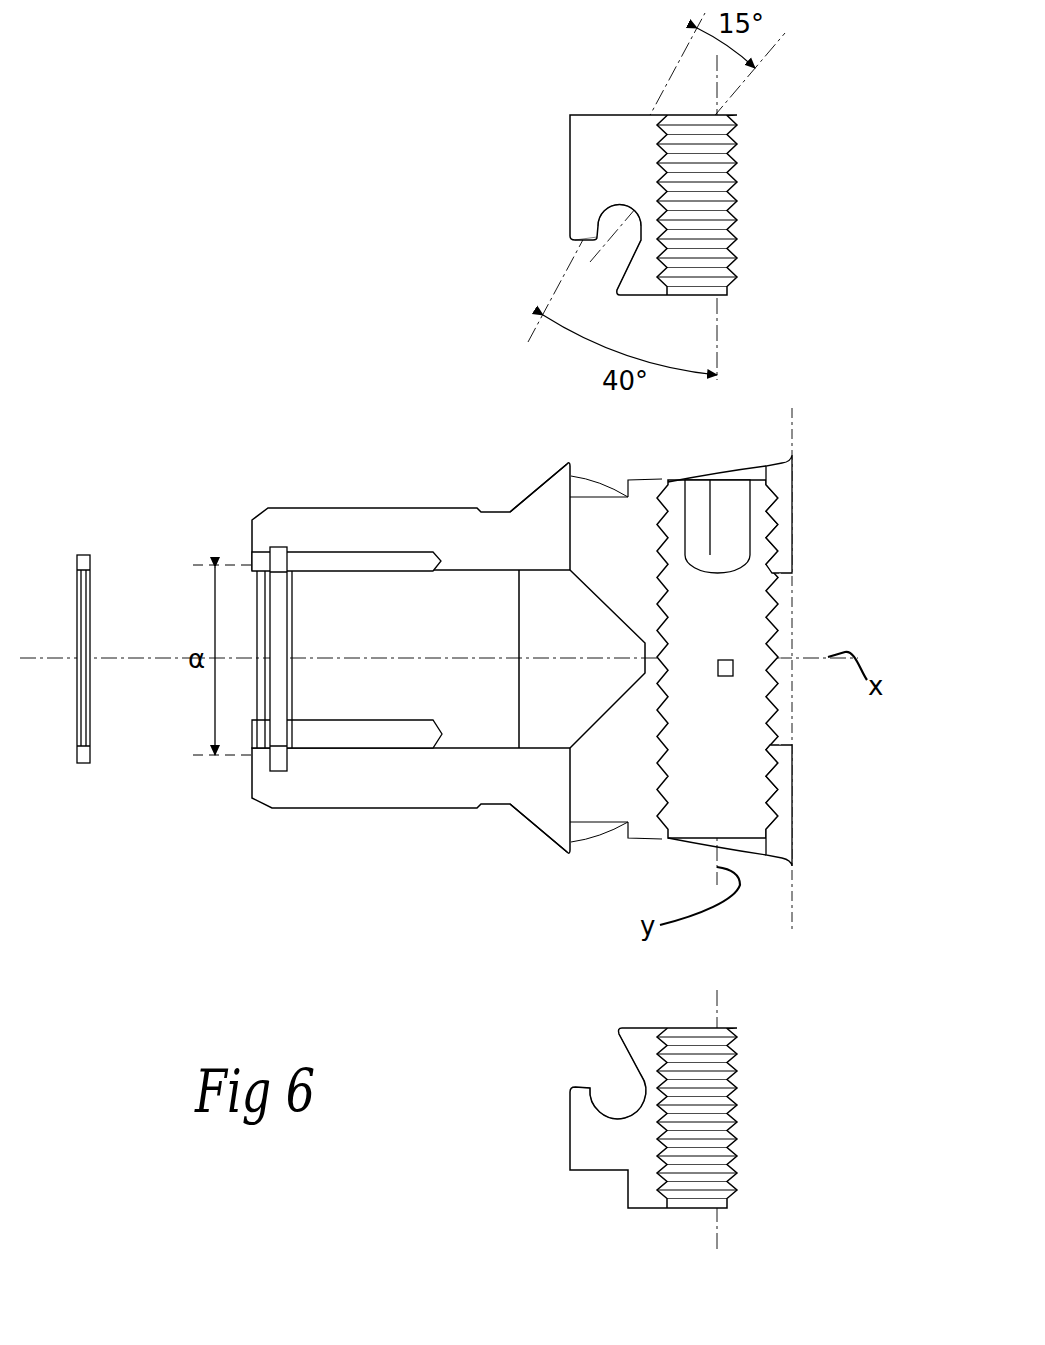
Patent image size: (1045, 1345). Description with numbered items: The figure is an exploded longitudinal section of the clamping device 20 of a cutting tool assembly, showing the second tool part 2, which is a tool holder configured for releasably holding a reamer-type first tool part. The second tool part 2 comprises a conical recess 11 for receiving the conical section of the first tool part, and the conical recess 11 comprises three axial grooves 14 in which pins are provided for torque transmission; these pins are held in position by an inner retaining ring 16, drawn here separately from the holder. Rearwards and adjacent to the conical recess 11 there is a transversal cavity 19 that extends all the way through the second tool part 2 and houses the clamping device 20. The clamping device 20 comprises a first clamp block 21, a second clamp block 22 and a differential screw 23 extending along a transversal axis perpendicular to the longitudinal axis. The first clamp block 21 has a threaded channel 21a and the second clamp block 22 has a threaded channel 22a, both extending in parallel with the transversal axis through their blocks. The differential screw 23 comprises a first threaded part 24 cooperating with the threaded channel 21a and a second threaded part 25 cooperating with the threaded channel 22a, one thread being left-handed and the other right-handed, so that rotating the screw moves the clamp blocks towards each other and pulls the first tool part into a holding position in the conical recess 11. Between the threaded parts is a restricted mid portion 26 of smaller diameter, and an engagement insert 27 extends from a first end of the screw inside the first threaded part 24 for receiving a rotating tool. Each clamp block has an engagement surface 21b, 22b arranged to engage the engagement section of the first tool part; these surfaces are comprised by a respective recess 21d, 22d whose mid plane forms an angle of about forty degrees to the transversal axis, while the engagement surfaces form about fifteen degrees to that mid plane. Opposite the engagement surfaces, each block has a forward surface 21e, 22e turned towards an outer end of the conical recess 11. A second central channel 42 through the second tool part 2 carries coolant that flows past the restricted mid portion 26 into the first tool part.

The second tool part 2 is at (457, 666).
The conical recess 11 is at (450, 570).
The axial grooves 14 is at (348, 548).
The inner retaining ring 16 is at (80, 562).
The transversal cavity 19 is at (570, 518).
The clamping device 20 is at (836, 400).
The first clamp block 21 is at (651, 235).
The threaded channel 21a is at (723, 200).
The engagement surface 21b is at (595, 245).
The recess 21d is at (591, 256).
The forward surface 21e is at (620, 270).
The second clamp block 22 is at (653, 1087).
The threaded channel 22a is at (727, 1113).
The engagement surface 22b is at (592, 1097).
The recess 22d is at (590, 1066).
The forward surface 22e is at (617, 1057).
The differential screw 23 is at (755, 628).
The first threaded part 24 is at (760, 518).
The second threaded part 25 is at (737, 797).
The restricted mid portion 26 is at (742, 662).
The engagement insert 27 is at (746, 500).
The second central channel 42 is at (783, 577).